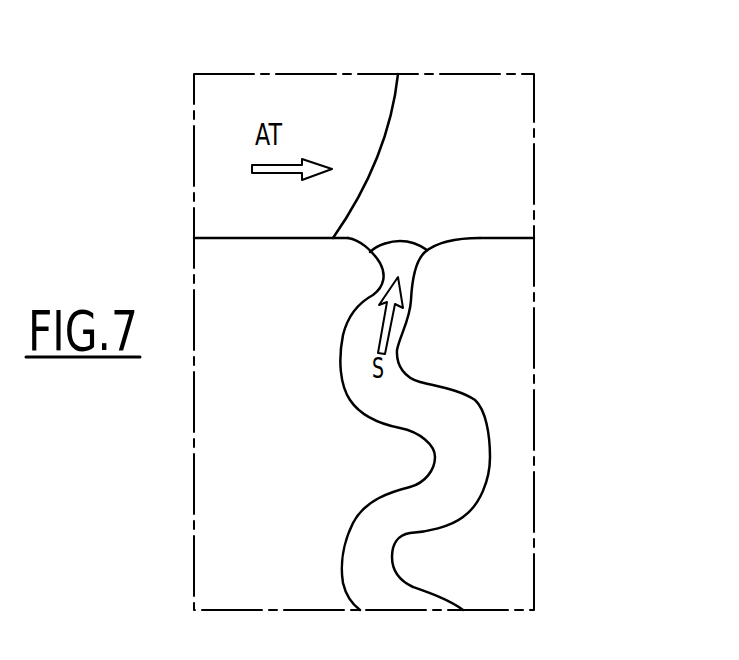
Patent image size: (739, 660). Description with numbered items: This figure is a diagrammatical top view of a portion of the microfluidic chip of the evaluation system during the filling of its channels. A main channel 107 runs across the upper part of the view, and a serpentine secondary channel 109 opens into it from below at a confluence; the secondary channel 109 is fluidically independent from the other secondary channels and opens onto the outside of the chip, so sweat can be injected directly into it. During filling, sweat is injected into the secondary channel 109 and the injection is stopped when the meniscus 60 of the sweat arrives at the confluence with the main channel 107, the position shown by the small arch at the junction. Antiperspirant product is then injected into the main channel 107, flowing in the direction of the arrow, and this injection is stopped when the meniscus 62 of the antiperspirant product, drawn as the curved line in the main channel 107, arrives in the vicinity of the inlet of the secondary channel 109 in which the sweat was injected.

The meniscus of the sweat 60 is at (417, 242).
The meniscus of the antiperspirant product 62 is at (388, 115).
The main channel 107 is at (502, 135).
The secondary channel 109 is at (487, 482).